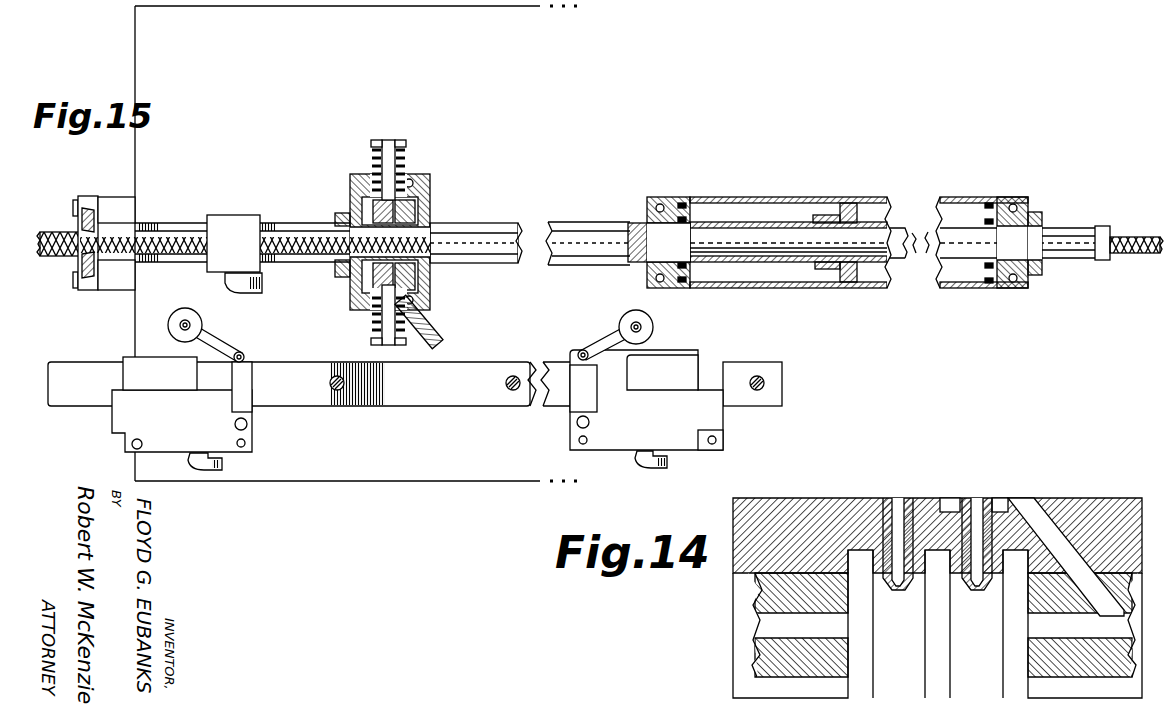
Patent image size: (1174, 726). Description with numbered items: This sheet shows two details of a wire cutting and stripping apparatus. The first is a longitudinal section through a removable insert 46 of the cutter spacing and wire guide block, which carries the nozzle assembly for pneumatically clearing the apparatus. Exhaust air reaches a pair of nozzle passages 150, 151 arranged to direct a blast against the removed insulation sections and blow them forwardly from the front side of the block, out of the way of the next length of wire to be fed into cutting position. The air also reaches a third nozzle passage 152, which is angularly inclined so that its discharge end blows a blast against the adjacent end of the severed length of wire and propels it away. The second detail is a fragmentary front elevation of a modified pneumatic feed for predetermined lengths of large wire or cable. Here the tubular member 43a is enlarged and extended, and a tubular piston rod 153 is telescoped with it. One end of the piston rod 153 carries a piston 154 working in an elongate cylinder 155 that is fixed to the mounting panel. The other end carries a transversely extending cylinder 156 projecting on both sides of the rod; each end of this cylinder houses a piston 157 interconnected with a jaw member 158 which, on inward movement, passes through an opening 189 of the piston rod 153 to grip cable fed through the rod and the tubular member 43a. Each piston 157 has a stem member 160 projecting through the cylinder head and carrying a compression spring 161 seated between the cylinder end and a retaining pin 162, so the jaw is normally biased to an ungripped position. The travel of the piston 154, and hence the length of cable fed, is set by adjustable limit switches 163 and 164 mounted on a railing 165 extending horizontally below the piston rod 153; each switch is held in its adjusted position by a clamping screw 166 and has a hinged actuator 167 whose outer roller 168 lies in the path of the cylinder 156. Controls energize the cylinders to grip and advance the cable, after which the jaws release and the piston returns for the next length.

In FIG. 15, the tubular member 43a is at (647, 223).
In FIG. 14, the removable insert 46 is at (767, 515).
In FIG. 14, the nozzle passage 150 is at (888, 513).
In FIG. 14, the nozzle passage 151 is at (950, 520).
In FIG. 14, the third nozzle passage 152 is at (1012, 528).
In FIG. 15, the tubular piston rod 153 is at (596, 230).
In FIG. 15, the piston 154 is at (858, 213).
In FIG. 15, the elongate cylinder 155 is at (748, 197).
In FIG. 15, the transversely extending cylinder 156 is at (420, 200).
In FIG. 15, the piston 157 is at (350, 188).
In FIG. 15, the jaw member 158 is at (412, 212).
In FIG. 15, the stem member 160 is at (378, 164).
In FIG. 15, the compression spring 161 is at (400, 162).
In FIG. 15, the retaining pin 162 is at (387, 141).
In FIG. 15, the limit switch 163 is at (672, 427).
In FIG. 15, the limit switch 164 is at (214, 427).
In FIG. 15, the railing 165 is at (485, 362).
In FIG. 15, the clamping screw 166 is at (217, 473).
In FIG. 15, the hinged actuator 167 is at (217, 337).
In FIG. 15, the roller 168 is at (172, 322).
In FIG. 15, the opening 189 is at (418, 219).